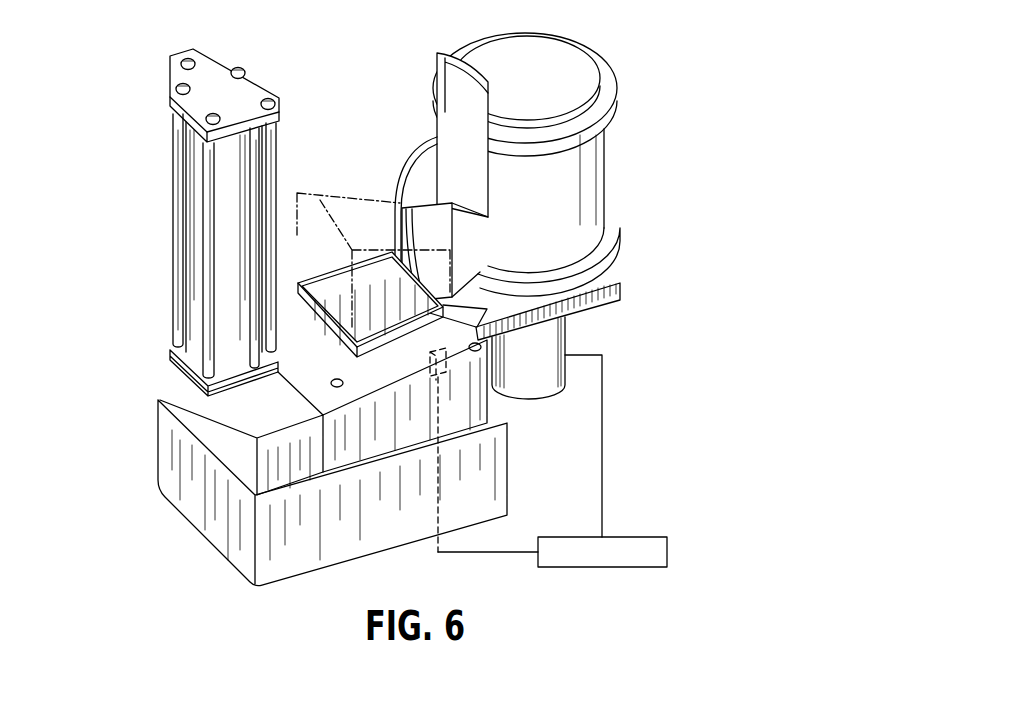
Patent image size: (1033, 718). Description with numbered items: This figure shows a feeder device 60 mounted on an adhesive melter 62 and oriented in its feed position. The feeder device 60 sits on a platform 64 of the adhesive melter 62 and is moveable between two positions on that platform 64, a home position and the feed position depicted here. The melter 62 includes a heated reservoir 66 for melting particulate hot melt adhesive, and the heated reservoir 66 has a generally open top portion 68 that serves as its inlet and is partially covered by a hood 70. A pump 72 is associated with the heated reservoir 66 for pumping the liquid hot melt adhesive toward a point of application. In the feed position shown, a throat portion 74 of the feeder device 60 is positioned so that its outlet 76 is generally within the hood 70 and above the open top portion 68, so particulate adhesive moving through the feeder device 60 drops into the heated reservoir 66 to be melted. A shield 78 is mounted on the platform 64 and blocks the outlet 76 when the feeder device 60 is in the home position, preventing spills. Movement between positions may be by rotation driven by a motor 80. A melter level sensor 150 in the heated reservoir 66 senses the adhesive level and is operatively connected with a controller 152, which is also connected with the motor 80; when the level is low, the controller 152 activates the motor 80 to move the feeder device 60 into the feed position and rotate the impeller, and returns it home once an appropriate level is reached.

The feeder device 60 is at (655, 43).
The adhesive melter 62 is at (135, 439).
The platform 64 is at (612, 300).
The heated reservoir 66 is at (160, 472).
The open top portion 68 is at (284, 277).
The hood 70 is at (363, 198).
The pump 72 is at (175, 197).
The throat portion 74 is at (443, 217).
The outlet 76 is at (480, 268).
The shield 78 is at (422, 158).
The motor 80 is at (520, 387).
The melter level sensor 150 is at (433, 374).
The controller 152 is at (653, 537).